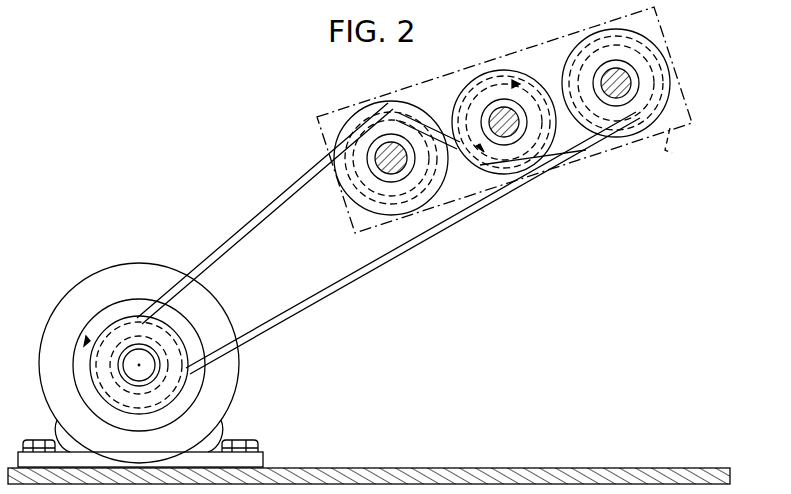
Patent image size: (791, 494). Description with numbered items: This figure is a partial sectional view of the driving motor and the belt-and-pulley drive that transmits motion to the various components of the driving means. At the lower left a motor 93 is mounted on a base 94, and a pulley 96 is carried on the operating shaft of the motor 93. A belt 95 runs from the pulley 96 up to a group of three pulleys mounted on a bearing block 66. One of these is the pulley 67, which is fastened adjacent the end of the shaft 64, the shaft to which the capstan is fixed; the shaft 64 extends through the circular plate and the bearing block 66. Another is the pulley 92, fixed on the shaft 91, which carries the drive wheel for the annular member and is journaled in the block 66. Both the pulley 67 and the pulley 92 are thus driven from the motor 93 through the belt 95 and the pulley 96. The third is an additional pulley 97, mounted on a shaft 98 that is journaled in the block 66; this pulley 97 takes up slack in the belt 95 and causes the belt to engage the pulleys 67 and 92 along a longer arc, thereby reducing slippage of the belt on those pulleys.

The shaft 64 is at (514, 110).
The bearing block 66 is at (683, 147).
The pulley 67 is at (489, 76).
The shaft 91 is at (630, 87).
The pulley 92 is at (662, 38).
The motor 93 is at (236, 400).
The base 94 is at (366, 470).
The belt 95 is at (468, 217).
The pulley 96 is at (94, 368).
The additional pulley 97 is at (387, 112).
The shaft 98 is at (402, 143).